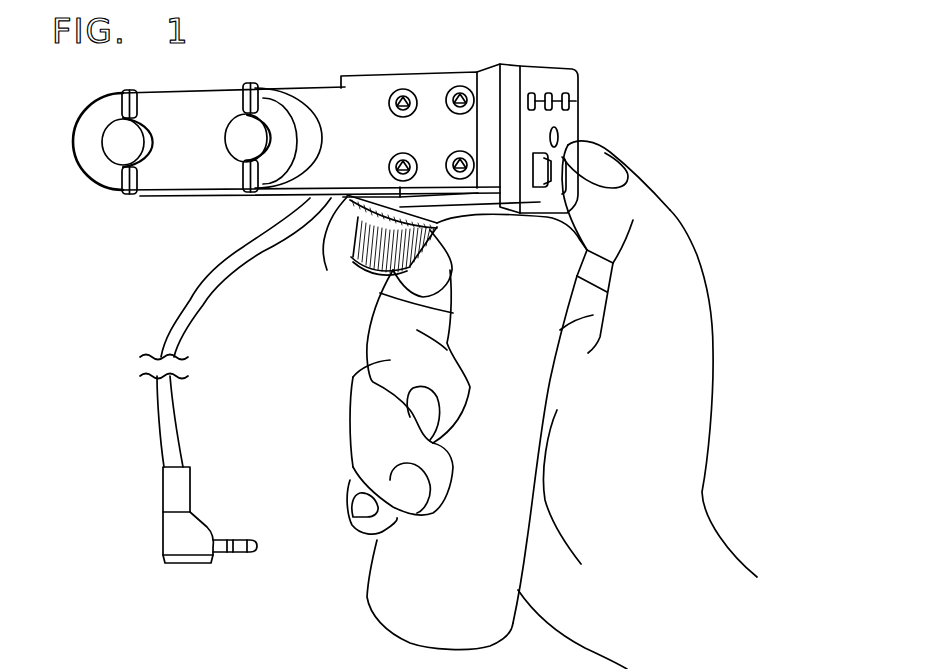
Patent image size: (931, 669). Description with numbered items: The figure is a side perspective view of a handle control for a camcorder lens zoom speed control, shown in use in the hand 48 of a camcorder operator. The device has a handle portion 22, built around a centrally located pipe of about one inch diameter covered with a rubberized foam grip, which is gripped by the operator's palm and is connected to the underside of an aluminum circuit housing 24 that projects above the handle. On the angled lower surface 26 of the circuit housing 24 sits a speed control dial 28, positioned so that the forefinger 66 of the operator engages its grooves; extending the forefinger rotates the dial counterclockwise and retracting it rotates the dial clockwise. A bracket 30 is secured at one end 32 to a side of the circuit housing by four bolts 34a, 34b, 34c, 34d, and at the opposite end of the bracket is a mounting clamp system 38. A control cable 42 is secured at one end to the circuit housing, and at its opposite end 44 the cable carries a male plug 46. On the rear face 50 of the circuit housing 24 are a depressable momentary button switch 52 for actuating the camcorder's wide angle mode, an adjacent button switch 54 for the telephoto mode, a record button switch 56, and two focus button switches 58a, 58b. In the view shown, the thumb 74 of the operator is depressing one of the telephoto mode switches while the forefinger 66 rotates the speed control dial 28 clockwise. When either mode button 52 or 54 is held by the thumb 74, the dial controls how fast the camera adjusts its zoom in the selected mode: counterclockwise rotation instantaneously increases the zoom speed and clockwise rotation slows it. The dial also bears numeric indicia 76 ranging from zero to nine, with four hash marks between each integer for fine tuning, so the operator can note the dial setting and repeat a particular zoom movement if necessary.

The handle portion 22 is at (382, 602).
The circuit housing 24 is at (500, 64).
The angled lower surface of the circuit housing 26 is at (337, 210).
The speed control dial 28 is at (453, 312).
The bracket 30 is at (333, 108).
The end of the bracket 32 is at (493, 200).
The bolt 34a is at (395, 95).
The bolt 34b is at (452, 92).
The bolt 34c is at (394, 160).
The bolt 34d is at (453, 157).
The mounting clamp system 38 is at (192, 170).
The control cable 42 is at (166, 316).
The opposite end of cable 44 is at (183, 453).
The male plug 46 is at (203, 543).
The hand of camcorder operator 48 is at (692, 500).
The rear face of circuit housing 50 is at (583, 108).
The momentary button switch 52 is at (537, 213).
The button switch 54 is at (568, 190).
The record button switch 56 is at (541, 90).
The focus button switch 58a is at (556, 104).
The focus button switch 58b is at (575, 99).
The forefinger 66 is at (340, 250).
The thumb 74 is at (633, 220).
The numeric indicia 76 is at (329, 249).